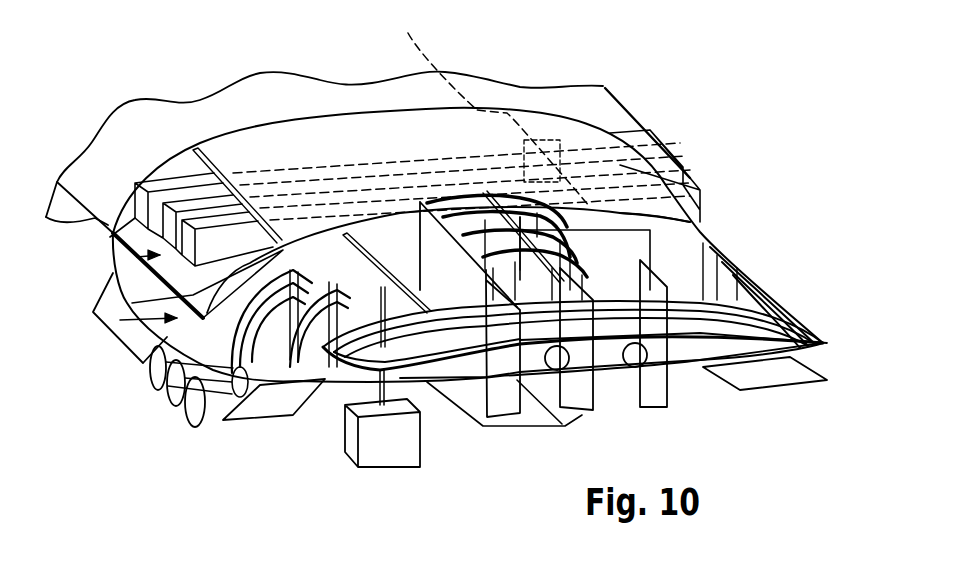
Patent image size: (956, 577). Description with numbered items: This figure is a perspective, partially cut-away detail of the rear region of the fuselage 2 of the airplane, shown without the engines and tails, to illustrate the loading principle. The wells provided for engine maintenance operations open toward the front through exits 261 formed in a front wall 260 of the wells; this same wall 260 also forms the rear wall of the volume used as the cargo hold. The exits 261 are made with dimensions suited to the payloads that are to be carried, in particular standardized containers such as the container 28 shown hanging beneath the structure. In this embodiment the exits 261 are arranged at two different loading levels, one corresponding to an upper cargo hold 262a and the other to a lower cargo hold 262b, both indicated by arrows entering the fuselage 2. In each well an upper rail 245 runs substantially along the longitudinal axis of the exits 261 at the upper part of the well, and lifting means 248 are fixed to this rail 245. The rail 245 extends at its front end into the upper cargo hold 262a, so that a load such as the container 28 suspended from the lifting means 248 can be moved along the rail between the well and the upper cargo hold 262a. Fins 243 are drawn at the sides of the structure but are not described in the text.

The fuselage 2 is at (603, 86).
The upper rail 245 is at (400, 280).
The exits 261 is at (623, 247).
The front wall 260 is at (663, 270).
The upper cargo hold 262a is at (113, 235).
The lower cargo hold 262b is at (120, 320).
The stabilizer fin 243 is at (277, 397).
The lifting means 248 is at (383, 385).
The standardized container 28 is at (397, 443).